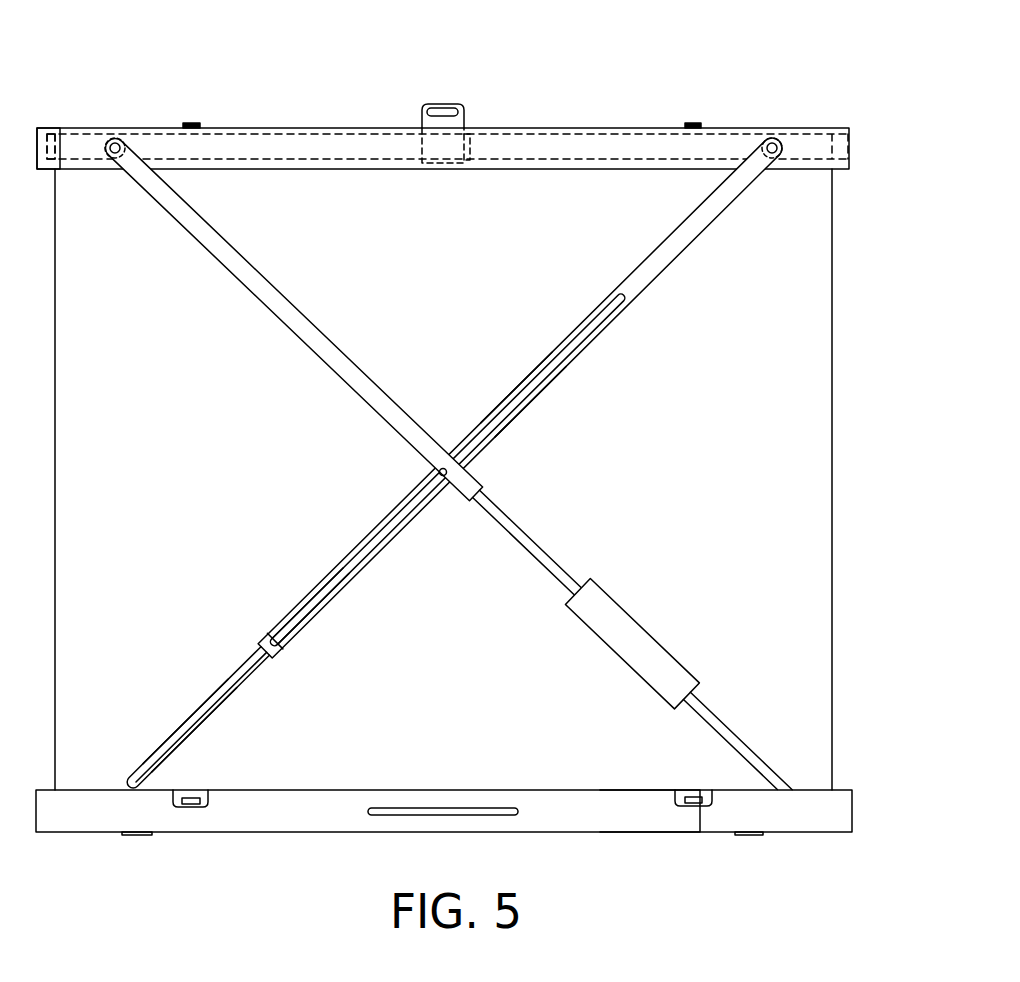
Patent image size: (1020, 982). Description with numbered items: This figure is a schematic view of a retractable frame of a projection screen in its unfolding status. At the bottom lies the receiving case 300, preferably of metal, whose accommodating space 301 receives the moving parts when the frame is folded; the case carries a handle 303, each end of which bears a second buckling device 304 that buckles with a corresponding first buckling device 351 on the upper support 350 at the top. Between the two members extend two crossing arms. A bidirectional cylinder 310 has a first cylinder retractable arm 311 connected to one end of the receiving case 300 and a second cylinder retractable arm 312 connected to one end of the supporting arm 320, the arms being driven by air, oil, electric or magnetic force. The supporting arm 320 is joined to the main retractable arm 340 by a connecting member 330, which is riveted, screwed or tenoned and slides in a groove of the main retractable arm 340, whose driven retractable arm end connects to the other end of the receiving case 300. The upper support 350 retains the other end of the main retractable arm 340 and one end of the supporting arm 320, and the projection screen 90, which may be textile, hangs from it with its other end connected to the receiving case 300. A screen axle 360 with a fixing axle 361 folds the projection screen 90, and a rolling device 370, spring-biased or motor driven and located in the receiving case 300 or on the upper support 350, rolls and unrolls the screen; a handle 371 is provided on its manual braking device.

The projection screen 90 is at (822, 275).
The receiving case 300 is at (592, 818).
The accommodating space 301 is at (650, 810).
The handle 303 is at (420, 814).
The second buckling device 304 is at (210, 806).
The bidirectional cylinder 310 is at (638, 645).
The first cylinder retractable arm 311 is at (730, 745).
The second cylinder retractable arm 312 is at (530, 549).
The supporting arm 320 is at (268, 300).
The connecting member 330 is at (448, 484).
The main retractable arm 340 is at (454, 463).
The upper support 350 is at (658, 128).
The first buckling device 351 is at (192, 122).
The screen axle 360 is at (70, 158).
The fixing axle 361 is at (48, 128).
The rolling device 370 is at (468, 148).
The handle 371 is at (442, 103).